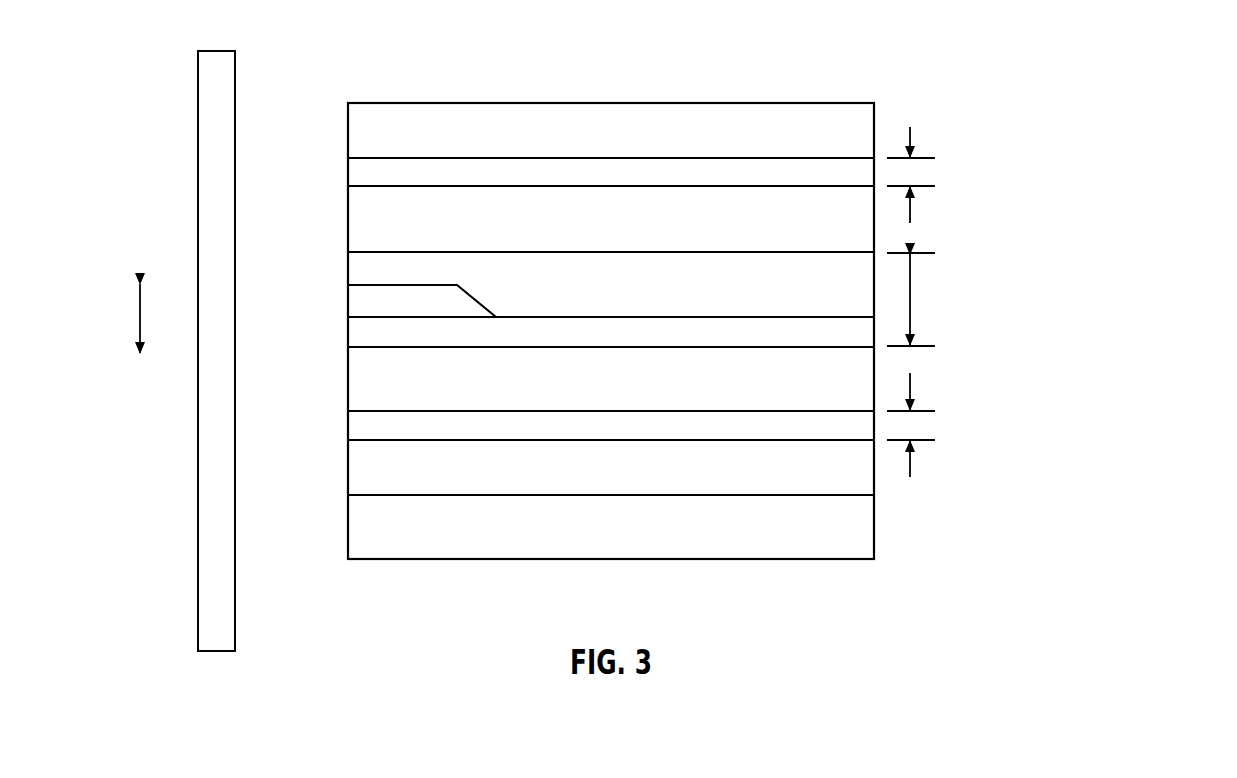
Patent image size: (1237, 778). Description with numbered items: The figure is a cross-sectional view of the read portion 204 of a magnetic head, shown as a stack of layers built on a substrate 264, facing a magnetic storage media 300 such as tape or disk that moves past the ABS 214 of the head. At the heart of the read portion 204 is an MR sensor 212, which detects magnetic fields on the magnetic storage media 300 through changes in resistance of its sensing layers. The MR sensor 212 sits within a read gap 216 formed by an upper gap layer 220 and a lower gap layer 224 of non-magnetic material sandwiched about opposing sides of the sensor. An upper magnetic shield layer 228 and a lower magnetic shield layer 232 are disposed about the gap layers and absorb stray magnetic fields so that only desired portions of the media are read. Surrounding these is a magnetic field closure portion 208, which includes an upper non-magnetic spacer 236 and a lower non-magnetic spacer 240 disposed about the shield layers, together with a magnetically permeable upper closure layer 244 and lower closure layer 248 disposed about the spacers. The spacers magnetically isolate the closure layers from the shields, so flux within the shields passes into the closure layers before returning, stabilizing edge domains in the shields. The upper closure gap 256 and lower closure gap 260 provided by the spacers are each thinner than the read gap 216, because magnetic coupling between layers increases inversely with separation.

The magnetic storage media 300 is at (235, 62).
The read portion 204 is at (1093, 186).
The magnetic field closure portion 208 is at (1093, 102).
The MR sensor 212 is at (368, 300).
The ABS 214 is at (346, 422).
The read gap 216 is at (910, 300).
The upper gap layer 220 is at (874, 286).
The lower gap layer 224 is at (874, 332).
The upper magnetic shield layer 228 is at (874, 232).
The lower magnetic shield layer 232 is at (874, 375).
The upper non-magnetic spacer 236 is at (874, 171).
The lower non-magnetic spacer 240 is at (874, 424).
The upper closure layer 244 is at (874, 125).
The lower closure layer 248 is at (874, 468).
The upper closure gap 256 is at (910, 140).
The lower closure gap 260 is at (910, 385).
The substrate 264 is at (874, 527).